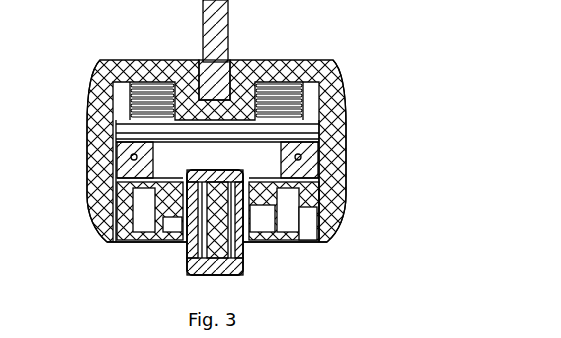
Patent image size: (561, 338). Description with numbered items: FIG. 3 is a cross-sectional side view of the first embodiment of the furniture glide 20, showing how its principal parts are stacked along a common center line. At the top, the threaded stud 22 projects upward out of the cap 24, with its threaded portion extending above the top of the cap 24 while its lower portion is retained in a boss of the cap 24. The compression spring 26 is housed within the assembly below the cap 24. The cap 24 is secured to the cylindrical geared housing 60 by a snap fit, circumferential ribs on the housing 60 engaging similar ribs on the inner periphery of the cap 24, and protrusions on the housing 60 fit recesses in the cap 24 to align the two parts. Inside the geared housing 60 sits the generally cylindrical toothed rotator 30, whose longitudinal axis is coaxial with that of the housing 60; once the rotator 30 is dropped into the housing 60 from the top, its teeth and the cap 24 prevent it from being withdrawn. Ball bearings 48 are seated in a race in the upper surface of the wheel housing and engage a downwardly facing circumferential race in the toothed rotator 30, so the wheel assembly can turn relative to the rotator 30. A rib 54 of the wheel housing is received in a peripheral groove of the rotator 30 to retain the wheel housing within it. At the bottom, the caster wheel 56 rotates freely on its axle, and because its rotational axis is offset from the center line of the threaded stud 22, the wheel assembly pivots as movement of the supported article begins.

The furniture glide 20 is at (350, 108).
The threaded stud 22 is at (226, 32).
The cap 24 is at (97, 92).
The compression spring 26 is at (137, 97).
The toothed rotator 30 is at (153, 158).
The ball bearings 48 is at (290, 172).
The rib 54 is at (163, 230).
The caster wheel 56 is at (242, 265).
The cylindrical geared housing 60 is at (95, 205).